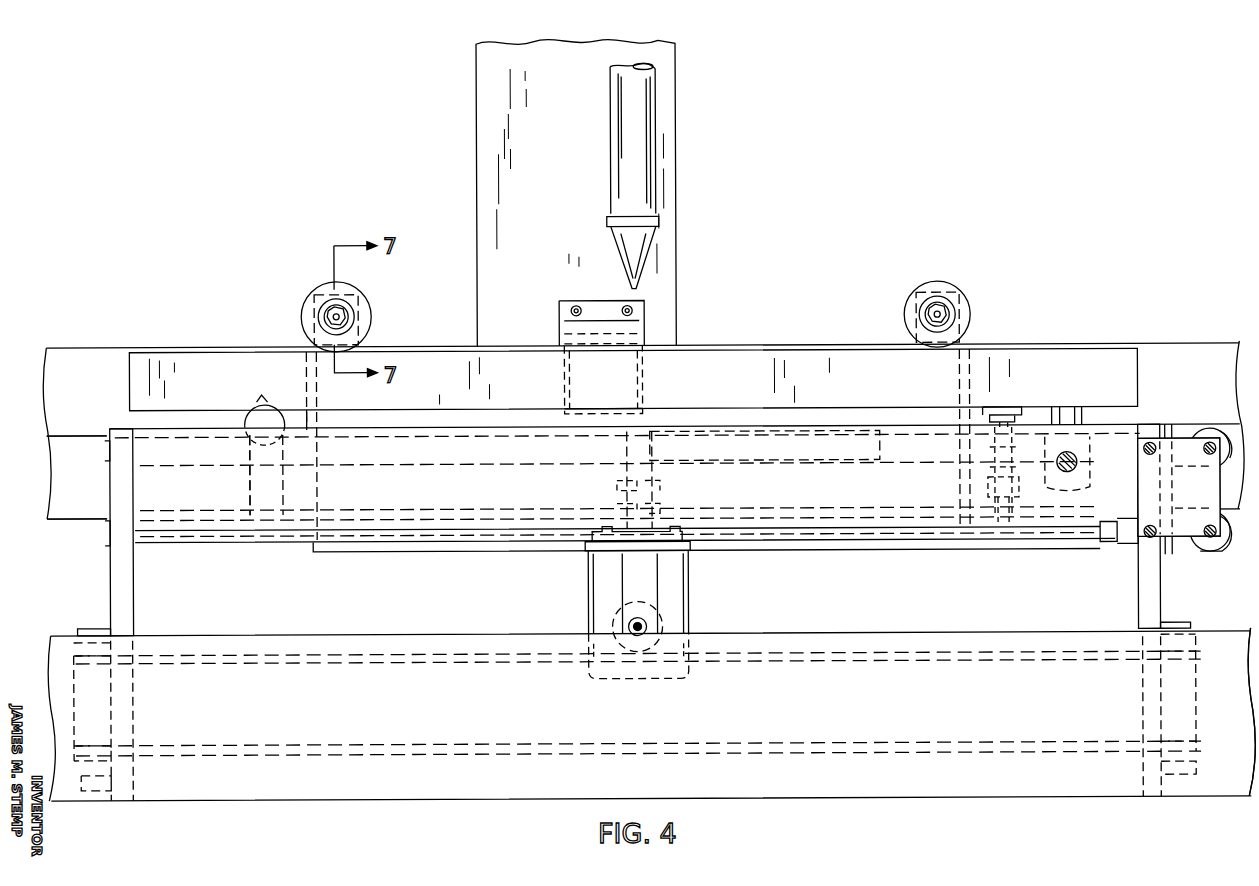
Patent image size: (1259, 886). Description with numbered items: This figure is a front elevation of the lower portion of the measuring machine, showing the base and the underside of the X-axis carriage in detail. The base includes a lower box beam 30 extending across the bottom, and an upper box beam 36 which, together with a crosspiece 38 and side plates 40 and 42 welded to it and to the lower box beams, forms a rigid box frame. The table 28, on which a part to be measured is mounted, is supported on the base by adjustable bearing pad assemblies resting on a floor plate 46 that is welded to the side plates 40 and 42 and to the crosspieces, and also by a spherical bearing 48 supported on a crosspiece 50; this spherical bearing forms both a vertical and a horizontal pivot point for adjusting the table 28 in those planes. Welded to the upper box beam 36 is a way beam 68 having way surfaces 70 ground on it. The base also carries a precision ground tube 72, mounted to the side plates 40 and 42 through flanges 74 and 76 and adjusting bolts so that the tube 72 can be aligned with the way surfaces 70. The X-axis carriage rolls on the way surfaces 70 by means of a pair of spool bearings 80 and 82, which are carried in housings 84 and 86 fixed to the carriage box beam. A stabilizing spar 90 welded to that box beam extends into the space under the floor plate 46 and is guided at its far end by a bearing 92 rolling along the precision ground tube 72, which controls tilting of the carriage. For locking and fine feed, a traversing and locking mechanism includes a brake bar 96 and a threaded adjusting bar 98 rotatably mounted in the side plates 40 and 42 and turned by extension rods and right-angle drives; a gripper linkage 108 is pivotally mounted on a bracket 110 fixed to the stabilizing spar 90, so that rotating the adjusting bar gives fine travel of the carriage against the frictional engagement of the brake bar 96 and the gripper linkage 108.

The table 28 is at (130, 381).
The lower box beam 30 is at (1220, 790).
The upper box beam 36 is at (82, 520).
The crosspiece 38 is at (270, 530).
The side plate 40 is at (1160, 578).
The side plate 42 is at (110, 583).
The floor plate 46 is at (1030, 538).
The spherical bearing 48 is at (258, 405).
The crosspiece 50 is at (250, 488).
The way beam 68 is at (1208, 388).
The way surfaces 70 is at (224, 347).
The precision ground tube 72 is at (885, 636).
The flange 74 is at (1167, 790).
The flange 76 is at (88, 790).
The spool bearing 80 is at (911, 309).
The spool bearing 82 is at (305, 307).
The housing 84 is at (967, 300).
The housing 86 is at (362, 298).
The stabilizing spar 90 is at (689, 605).
The bearing 92 is at (615, 621).
The brake bar 96 is at (835, 452).
The threaded adjusting bar 98 is at (925, 552).
The gripper linkage 108 is at (651, 452).
The bracket 110 is at (661, 490).